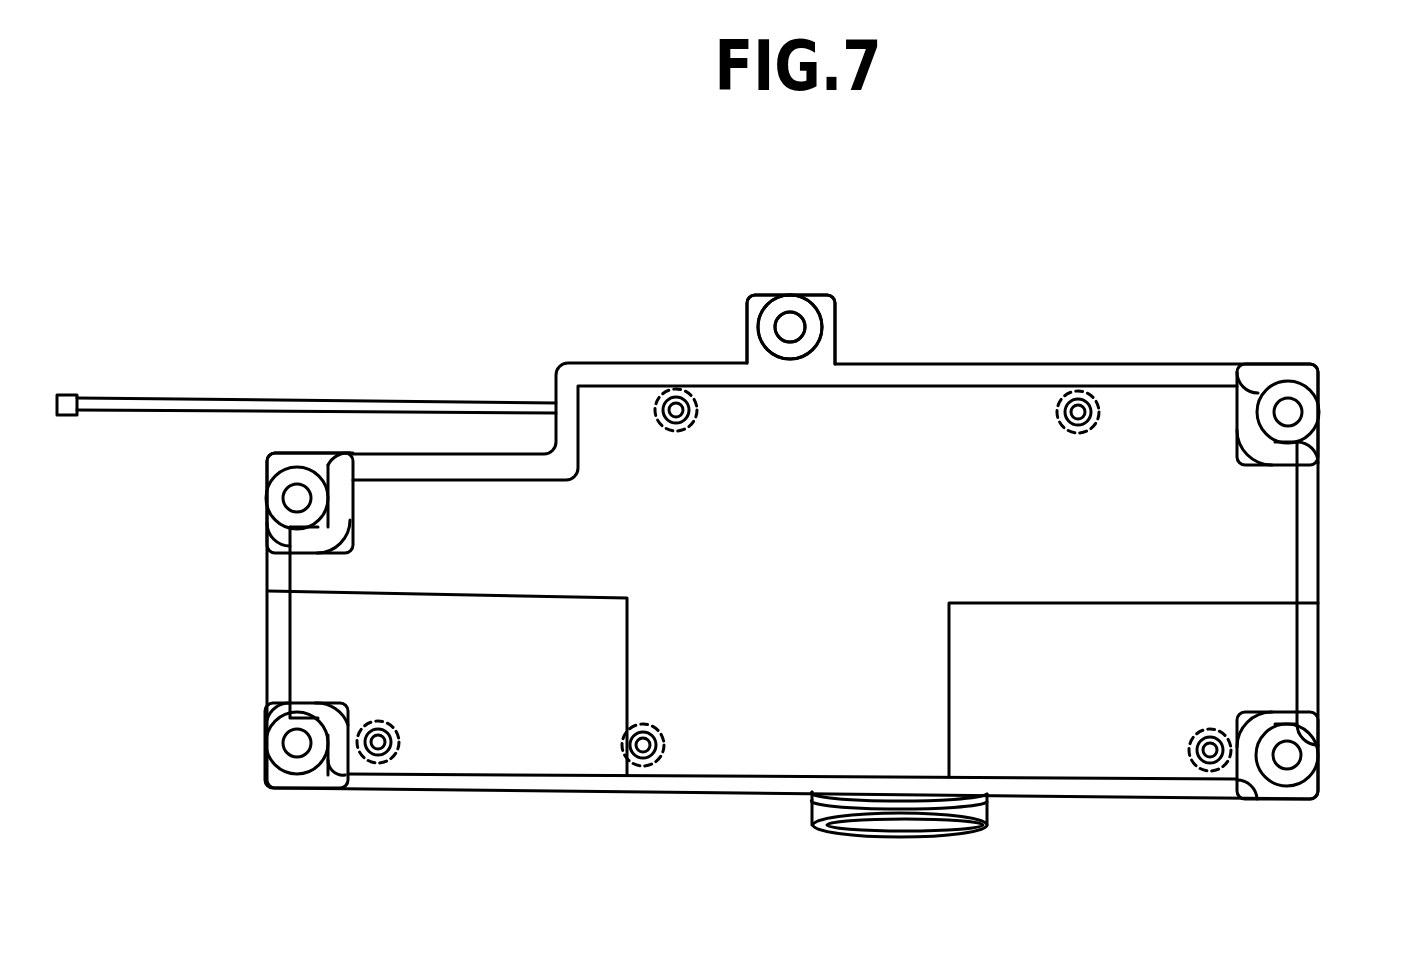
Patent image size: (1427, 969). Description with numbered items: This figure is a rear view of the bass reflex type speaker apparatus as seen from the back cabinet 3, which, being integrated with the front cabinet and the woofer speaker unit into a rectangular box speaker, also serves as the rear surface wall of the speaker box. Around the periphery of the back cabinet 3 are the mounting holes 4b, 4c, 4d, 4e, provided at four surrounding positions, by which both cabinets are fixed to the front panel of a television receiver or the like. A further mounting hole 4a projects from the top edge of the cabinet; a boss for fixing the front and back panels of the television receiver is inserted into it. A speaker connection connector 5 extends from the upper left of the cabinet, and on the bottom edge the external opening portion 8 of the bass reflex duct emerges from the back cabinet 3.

The back cabinet 3 is at (1057, 767).
The mounting hole 4a is at (796, 318).
The mounting hole 4b is at (1293, 413).
The mounting hole 4c is at (1297, 757).
The mounting hole 4d is at (287, 744).
The mounting hole 4e is at (287, 500).
The speaker connection connector 5 is at (237, 403).
The external opening portion of the bass reflex duct 8 is at (900, 825).